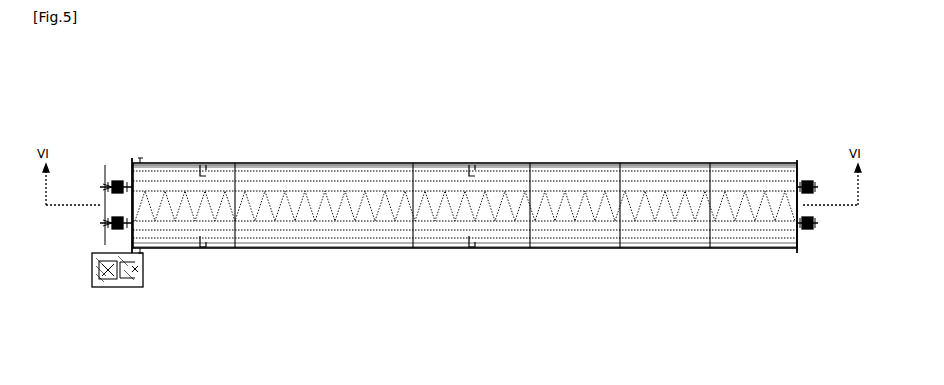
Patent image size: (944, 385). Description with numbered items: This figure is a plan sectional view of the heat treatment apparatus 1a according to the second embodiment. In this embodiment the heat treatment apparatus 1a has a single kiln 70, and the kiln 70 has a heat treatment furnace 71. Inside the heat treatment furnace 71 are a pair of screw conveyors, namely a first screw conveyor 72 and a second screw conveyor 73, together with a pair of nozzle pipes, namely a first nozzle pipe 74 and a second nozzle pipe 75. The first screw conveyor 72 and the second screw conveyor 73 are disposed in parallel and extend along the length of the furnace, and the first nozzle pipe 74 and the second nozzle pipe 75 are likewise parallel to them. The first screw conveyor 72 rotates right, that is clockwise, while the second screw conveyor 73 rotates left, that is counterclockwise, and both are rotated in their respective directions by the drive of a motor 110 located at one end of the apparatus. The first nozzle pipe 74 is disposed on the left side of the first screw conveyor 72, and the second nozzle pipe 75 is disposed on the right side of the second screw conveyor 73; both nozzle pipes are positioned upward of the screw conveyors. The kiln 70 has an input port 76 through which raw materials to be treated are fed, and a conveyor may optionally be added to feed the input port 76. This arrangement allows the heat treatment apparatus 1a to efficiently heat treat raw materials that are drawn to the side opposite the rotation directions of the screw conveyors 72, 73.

The heat treatment apparatus 1a is at (455, 204).
The kiln 70 is at (465, 204).
The heat treatment furnace 71 is at (494, 193).
The first screw conveyor 72 is at (258, 163).
The second screw conveyor 73 is at (270, 249).
The first nozzle pipe 74 is at (337, 163).
The second nozzle pipe 75 is at (336, 249).
The input port 76 is at (180, 197).
The motor 110 is at (130, 288).